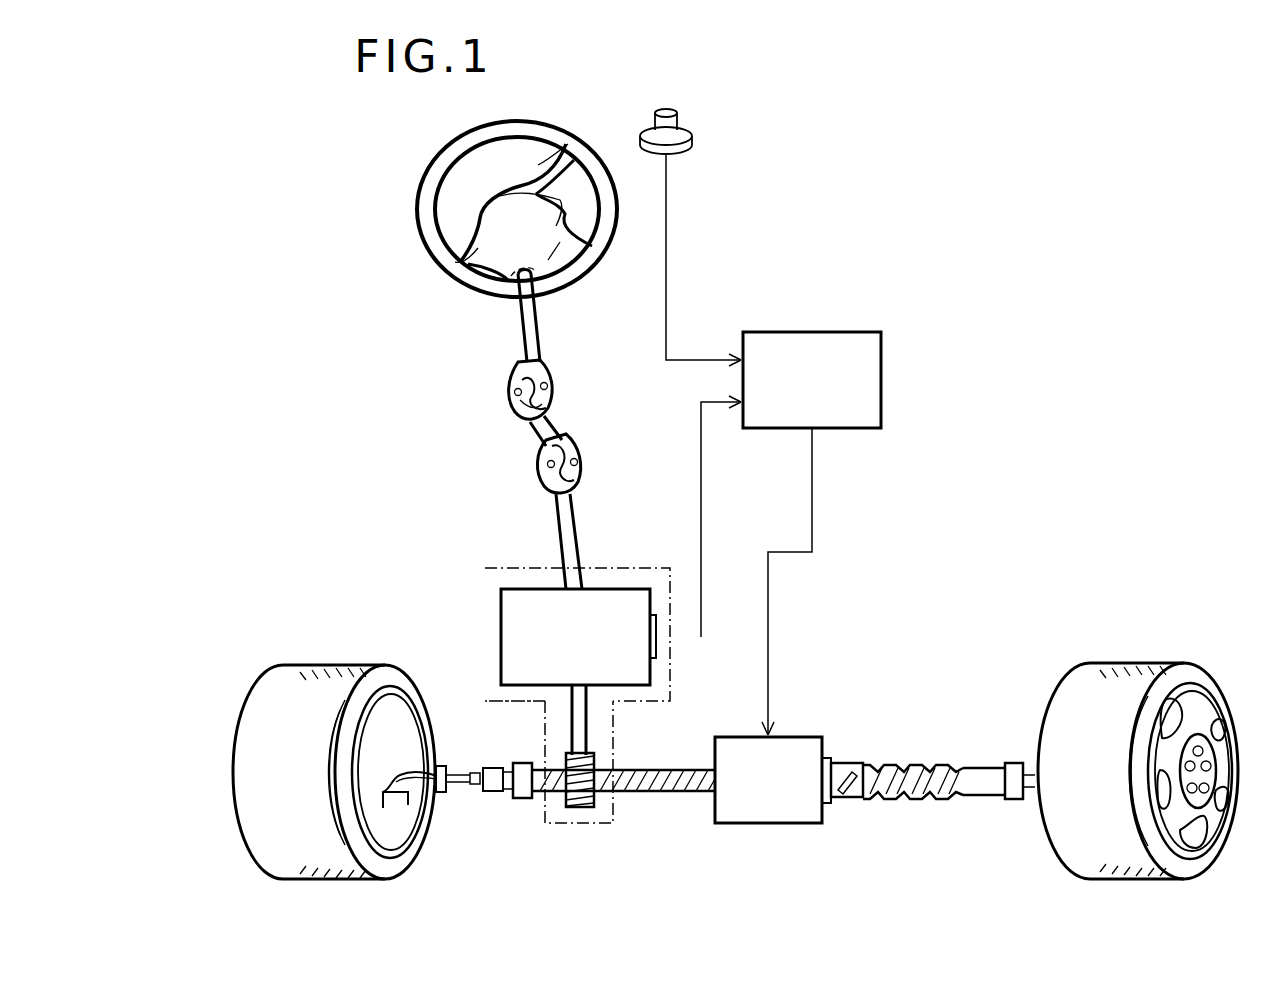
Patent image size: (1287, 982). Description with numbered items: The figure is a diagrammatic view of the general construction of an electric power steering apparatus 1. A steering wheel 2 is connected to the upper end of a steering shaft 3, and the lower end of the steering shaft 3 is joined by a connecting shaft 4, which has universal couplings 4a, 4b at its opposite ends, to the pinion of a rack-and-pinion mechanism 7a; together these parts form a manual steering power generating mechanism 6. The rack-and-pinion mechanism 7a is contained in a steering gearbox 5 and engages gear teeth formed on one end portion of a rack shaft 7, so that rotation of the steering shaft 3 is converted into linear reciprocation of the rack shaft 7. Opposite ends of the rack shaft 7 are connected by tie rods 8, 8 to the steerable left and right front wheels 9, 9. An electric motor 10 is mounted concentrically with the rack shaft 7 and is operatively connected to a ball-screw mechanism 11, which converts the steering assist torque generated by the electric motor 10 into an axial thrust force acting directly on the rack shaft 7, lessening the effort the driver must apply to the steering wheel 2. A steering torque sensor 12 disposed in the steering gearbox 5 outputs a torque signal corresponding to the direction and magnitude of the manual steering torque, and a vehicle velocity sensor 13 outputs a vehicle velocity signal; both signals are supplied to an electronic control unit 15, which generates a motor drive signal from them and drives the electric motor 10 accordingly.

The electric power steering apparatus 1 is at (951, 267).
The steering wheel 2 is at (432, 176).
The steering shaft 3 is at (514, 326).
The connecting shaft 4 is at (569, 447).
The universal coupling 4a is at (540, 372).
The universal coupling 4b is at (560, 454).
The steering gearbox 5 is at (578, 823).
The manual steering power generating mechanism 6 is at (471, 391).
The rack shaft 7 is at (768, 783).
The rack-and-pinion mechanism 7a is at (650, 770).
The tie rods 8 is at (432, 770).
The front wheels 9 is at (302, 664).
The electric motor 10 is at (768, 823).
The ball-screw mechanism 11 is at (918, 760).
The steering torque sensor 12 is at (501, 634).
The vehicle velocity sensor 13 is at (696, 138).
The electronic control unit 15 is at (814, 332).